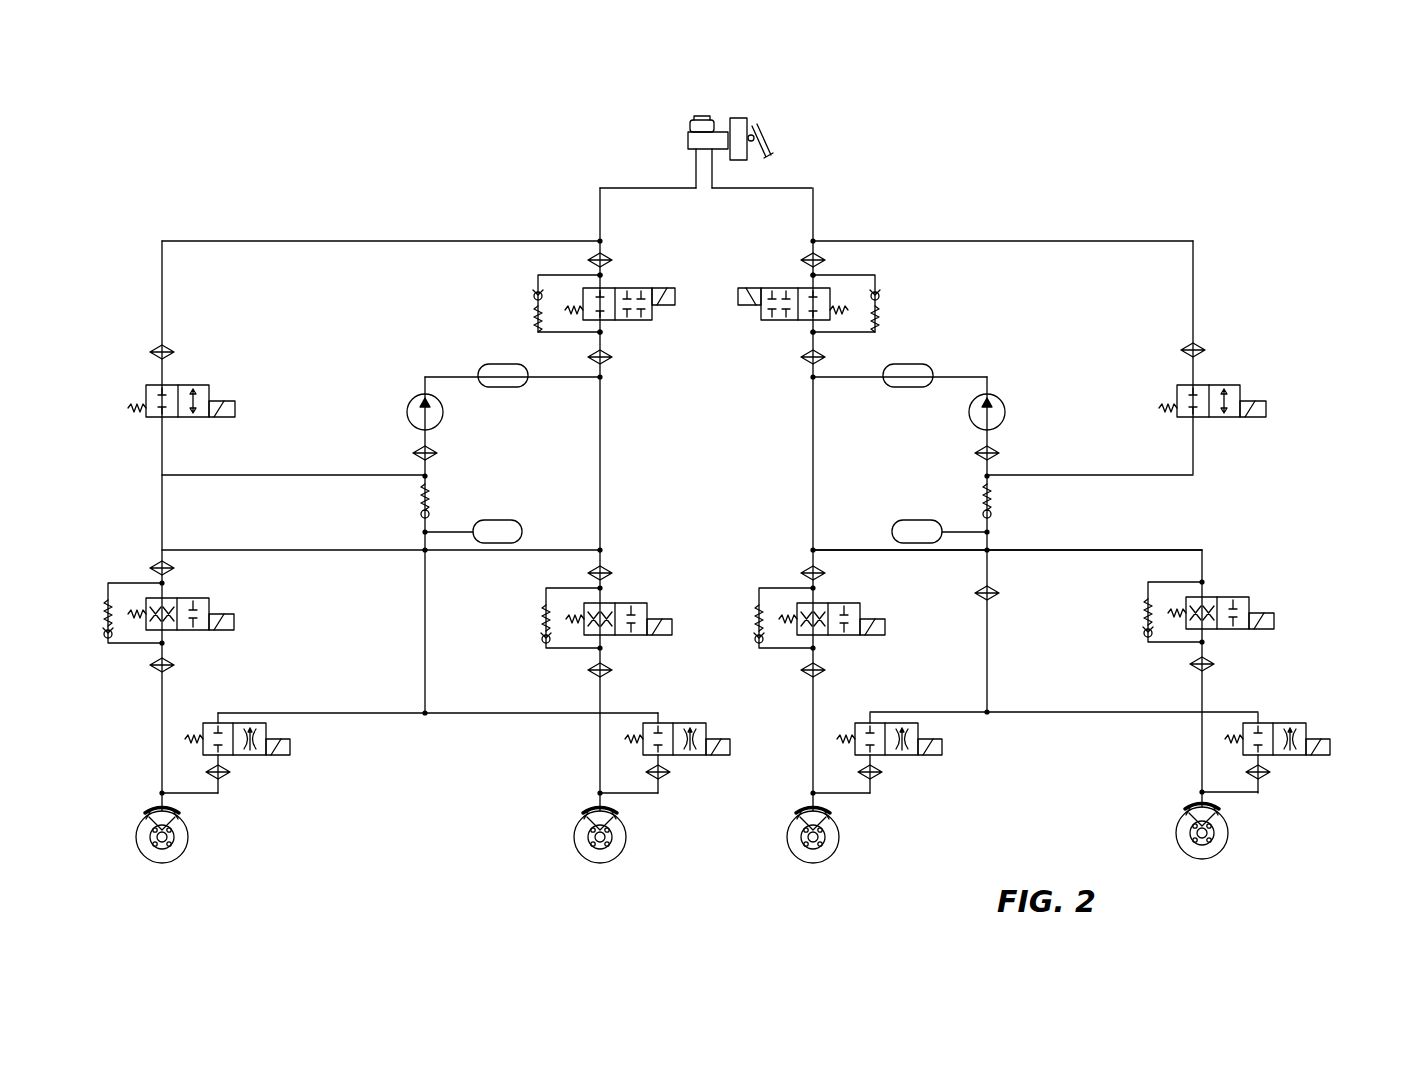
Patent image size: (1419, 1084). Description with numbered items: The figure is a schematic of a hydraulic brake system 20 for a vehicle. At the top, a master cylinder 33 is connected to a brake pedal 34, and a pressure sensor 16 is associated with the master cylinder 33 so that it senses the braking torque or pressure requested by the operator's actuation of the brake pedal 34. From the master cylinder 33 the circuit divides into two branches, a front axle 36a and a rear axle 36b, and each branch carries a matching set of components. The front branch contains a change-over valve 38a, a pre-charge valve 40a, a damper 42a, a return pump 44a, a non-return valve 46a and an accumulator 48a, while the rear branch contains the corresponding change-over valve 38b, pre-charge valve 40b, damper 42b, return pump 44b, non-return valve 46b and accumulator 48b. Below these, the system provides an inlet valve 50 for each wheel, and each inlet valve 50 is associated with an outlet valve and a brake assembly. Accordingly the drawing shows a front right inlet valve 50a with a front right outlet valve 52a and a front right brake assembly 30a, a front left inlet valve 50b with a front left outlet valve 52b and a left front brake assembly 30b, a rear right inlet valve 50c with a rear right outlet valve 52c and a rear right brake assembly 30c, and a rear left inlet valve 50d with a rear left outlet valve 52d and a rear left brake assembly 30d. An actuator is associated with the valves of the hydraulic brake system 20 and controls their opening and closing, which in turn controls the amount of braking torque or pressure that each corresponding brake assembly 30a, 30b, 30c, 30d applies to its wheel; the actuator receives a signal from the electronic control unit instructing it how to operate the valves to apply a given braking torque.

The pressure sensor 16 is at (750, 161).
The brake system 20 is at (1068, 178).
The front right brake assembly 30a is at (1185, 823).
The left front brake assembly 30b is at (796, 852).
The rear right brake assembly 30c is at (583, 825).
The rear left brake assembly 30d is at (145, 825).
The master cylinder 33 is at (748, 101).
The brake pedal 34 is at (762, 143).
The front axle 36a is at (796, 187).
The rear axle 36b is at (626, 187).
The change-over valve 38a is at (792, 321).
The change-over valve 38b is at (620, 321).
The pre-charge valve 40a is at (1214, 418).
The pre-charge valve 40b is at (200, 418).
The damper 42a is at (928, 365).
The damper 42b is at (490, 365).
The return pump 44a is at (972, 425).
The return pump 44b is at (441, 425).
The non-return valve 46a is at (982, 494).
The non-return valve 46b is at (431, 494).
The accumulator 48a is at (892, 532).
The accumulator 48b is at (523, 532).
The inlet valve 50 is at (1240, 545).
The front right inlet valve 50a is at (1224, 598).
The front left inlet valve 50b is at (852, 604).
The front rear inlet valve 50c is at (628, 604).
The rear left inlet valve 50d is at (190, 600).
The front right outlet valve 52a is at (1270, 722).
The front left outlet valve 52b is at (920, 725).
The rear right outlet valve 52c is at (685, 722).
The rear left outlet valve 52d is at (275, 725).